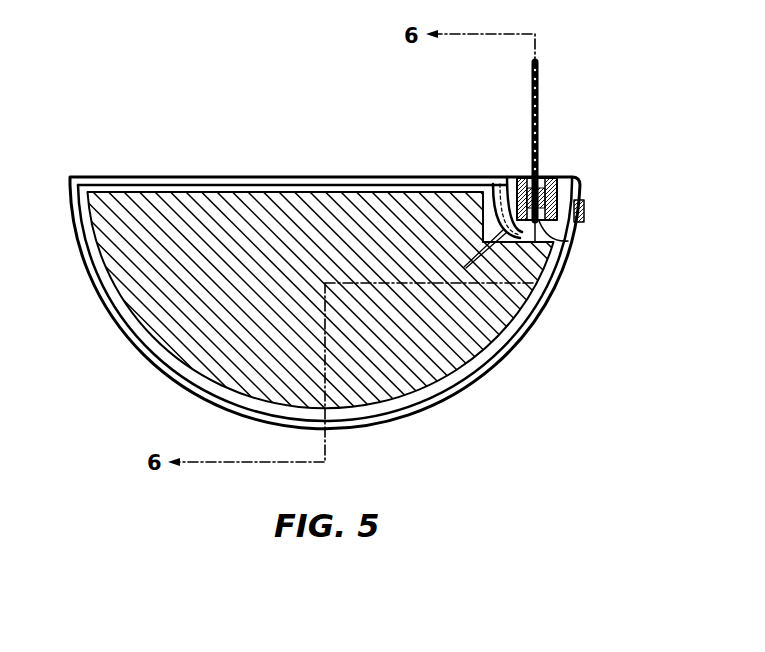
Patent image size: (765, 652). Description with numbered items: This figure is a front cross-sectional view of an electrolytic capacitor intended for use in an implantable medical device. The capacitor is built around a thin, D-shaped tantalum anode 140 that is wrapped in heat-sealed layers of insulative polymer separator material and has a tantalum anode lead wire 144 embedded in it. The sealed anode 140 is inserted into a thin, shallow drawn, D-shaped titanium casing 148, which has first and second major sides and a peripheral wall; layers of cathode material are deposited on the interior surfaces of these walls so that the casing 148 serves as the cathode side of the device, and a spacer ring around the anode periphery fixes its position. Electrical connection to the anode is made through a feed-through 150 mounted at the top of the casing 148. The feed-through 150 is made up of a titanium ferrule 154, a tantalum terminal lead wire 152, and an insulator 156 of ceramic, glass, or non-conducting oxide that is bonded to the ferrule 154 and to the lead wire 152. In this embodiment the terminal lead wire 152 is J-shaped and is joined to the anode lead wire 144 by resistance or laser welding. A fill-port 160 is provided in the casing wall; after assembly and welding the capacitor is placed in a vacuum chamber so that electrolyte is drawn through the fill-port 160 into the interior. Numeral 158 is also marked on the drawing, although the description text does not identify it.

The anode 140 is at (412, 412).
The anode lead wire 144 is at (463, 237).
The casing 148 is at (550, 312).
The feed-through 150 is at (544, 177).
The terminal lead wire 152 is at (513, 172).
The ferrule 154 is at (553, 198).
The insulator 156 is at (574, 241).
The filler body 158 is at (482, 364).
The fill-port 160 is at (585, 213).